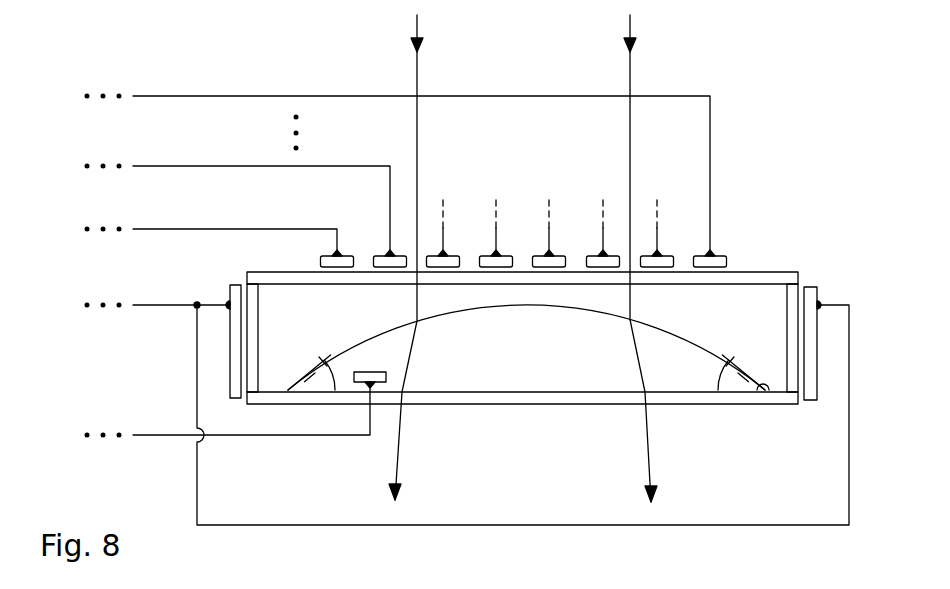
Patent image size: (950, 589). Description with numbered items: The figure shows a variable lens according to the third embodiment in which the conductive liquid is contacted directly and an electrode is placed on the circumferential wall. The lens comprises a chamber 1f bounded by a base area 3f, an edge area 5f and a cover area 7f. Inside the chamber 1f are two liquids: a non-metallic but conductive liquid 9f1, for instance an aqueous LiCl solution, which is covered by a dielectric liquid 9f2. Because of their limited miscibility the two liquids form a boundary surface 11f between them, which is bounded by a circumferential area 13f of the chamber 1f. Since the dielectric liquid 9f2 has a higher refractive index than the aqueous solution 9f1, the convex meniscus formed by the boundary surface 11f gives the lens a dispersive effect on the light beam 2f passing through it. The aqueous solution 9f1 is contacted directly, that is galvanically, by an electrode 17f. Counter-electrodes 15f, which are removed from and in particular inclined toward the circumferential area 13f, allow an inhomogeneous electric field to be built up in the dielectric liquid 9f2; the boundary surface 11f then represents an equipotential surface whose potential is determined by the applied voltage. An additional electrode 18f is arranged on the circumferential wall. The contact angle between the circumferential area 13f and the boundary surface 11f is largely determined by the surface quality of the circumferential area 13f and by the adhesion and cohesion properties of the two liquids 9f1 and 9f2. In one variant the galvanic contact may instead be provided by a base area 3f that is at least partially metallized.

The chamber 1f is at (531, 358).
The light beam 2f is at (632, 78).
The base area 3f is at (578, 395).
The edge area 5f is at (793, 396).
The cover area 7f is at (764, 278).
The first liquid 9f1 is at (305, 327).
The second liquid 9f2 is at (540, 367).
The boundary surface 11f is at (440, 322).
The circumferential area 13f is at (772, 392).
The counter-electrodes 15f is at (598, 256).
The electrode 17f is at (380, 405).
The electrode on the circumferential wall 18f is at (236, 296).